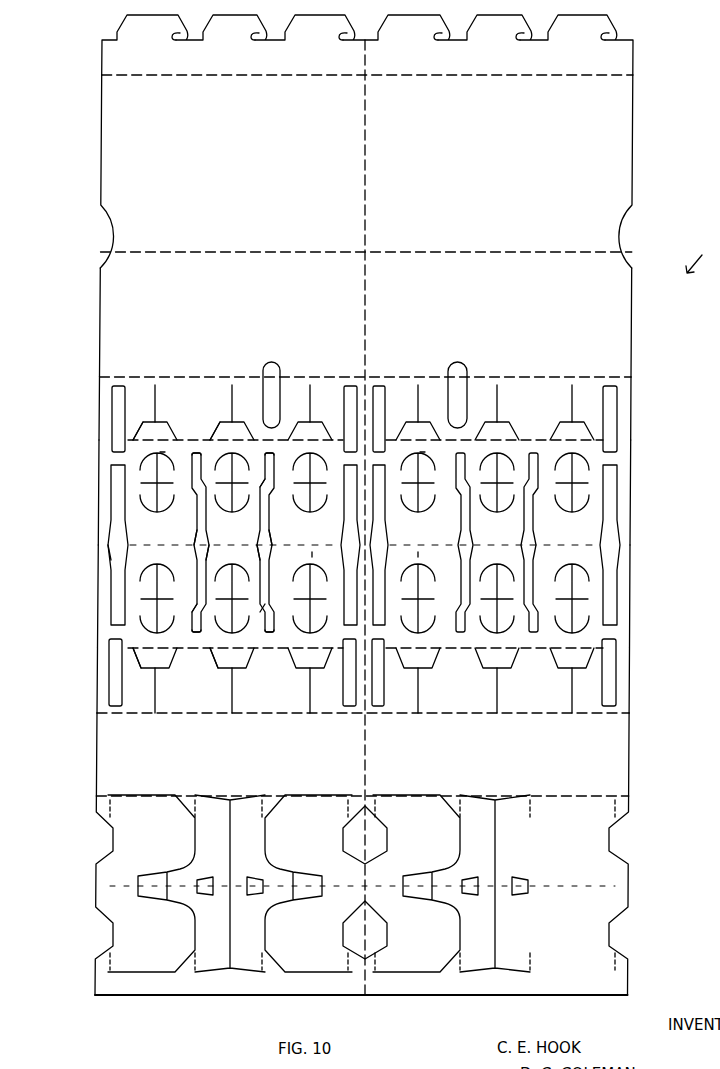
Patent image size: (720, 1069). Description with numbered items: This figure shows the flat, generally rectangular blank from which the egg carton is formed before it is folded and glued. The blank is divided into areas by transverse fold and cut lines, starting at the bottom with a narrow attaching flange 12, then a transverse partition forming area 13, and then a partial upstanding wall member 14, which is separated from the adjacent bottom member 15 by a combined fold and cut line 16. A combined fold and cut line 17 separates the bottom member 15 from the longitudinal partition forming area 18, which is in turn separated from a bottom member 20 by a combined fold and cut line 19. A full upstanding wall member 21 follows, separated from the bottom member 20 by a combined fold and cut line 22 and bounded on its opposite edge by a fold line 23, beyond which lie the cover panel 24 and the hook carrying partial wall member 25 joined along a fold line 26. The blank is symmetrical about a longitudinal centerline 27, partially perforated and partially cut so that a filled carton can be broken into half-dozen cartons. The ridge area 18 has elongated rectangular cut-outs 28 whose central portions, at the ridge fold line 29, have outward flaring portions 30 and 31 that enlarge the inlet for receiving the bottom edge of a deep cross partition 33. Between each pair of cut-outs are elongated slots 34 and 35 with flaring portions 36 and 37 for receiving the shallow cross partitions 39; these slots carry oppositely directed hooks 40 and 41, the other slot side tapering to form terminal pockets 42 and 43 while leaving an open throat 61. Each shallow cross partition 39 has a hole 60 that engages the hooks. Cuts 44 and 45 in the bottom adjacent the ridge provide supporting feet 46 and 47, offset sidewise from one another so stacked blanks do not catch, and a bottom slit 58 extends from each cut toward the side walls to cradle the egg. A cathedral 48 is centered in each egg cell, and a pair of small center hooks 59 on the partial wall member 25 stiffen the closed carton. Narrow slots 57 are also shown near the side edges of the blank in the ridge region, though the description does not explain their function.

The attaching flange 12 is at (108, 988).
The transverse partition forming area 13 is at (97, 900).
The partial upstanding wall member 14 is at (97, 766).
The bottom member 15 is at (96, 687).
The combined fold and cut line 16 is at (97, 714).
The combined fold and cut line 17 is at (97, 648).
The longitudinal partition forming area 18 is at (98, 600).
The combined fold and cut line 19 is at (99, 446).
The bottom member 20 is at (99, 403).
The full upstanding wall member 21 is at (100, 298).
The combined fold and cut line 22 is at (99, 378).
The fold line 23 is at (100, 255).
The cover panel 24 is at (101, 150).
The hook carrying partial wall member 25 is at (100, 58).
The fold line 26 is at (101, 78).
The longitudinal centerline 27 is at (368, 205).
The elongated rectangular cut-out 28 is at (111, 492).
The ridge fold line 29 is at (620, 547).
The outward flaring portion 30 is at (108, 541).
The outward flaring portion 31 is at (127, 545).
The deep cross partition 33 is at (148, 813).
The elongated slot 34 is at (208, 525).
The elongated slot 35 is at (259, 523).
The outward flaring portion 36 is at (188, 549).
The outward flaring portion 37 is at (210, 553).
The shallow cross partition 39 is at (237, 812).
The hook 40 is at (192, 490).
The hook 41 is at (273, 486).
The terminal pocket 42 is at (202, 457).
The terminal pocket 43 is at (270, 458).
The cut 44 is at (162, 671).
The cut 45 is at (163, 421).
The supporting foot 46 is at (144, 671).
The supporting foot 47 is at (147, 427).
The cathedral 48 is at (167, 449).
The slot 57 is at (112, 419).
The bottom slit 58 is at (158, 393).
The center hook 59 is at (352, 36).
The hole 60 is at (205, 892).
The open throat 61 is at (206, 593).